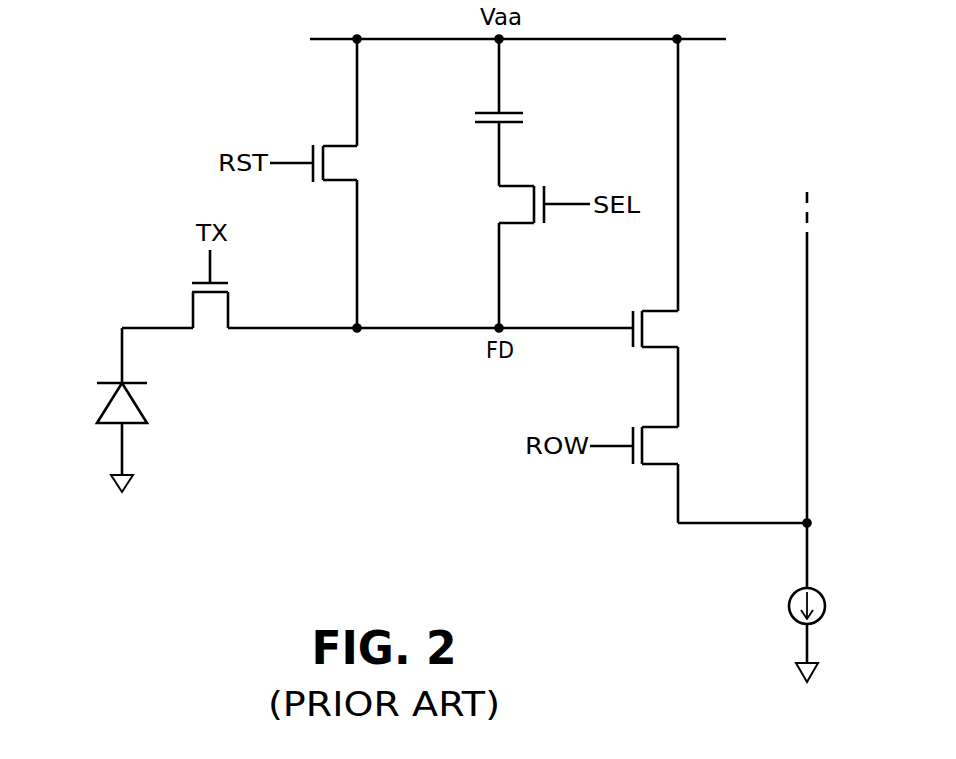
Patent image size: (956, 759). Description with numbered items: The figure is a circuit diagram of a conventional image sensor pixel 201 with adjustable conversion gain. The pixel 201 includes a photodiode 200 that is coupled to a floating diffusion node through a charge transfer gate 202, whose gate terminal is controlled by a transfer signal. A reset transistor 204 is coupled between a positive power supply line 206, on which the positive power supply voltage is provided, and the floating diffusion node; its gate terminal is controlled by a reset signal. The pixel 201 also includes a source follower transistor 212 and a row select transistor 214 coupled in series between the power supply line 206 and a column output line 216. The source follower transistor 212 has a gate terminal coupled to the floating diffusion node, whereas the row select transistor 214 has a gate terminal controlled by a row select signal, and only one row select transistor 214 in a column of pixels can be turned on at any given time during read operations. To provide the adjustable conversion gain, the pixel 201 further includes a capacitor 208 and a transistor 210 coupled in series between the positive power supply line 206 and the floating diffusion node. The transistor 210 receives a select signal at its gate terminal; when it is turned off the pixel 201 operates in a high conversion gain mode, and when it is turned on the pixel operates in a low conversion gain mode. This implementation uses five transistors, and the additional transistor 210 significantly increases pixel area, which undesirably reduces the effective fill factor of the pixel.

The photodiode 200 is at (112, 406).
The image sensor pixel 201 is at (138, 76).
The charge transfer gate 202 is at (194, 311).
The reset transistor 204 is at (341, 151).
The positive power supply line 206 is at (413, 37).
The capacitor 208 is at (512, 110).
The transistor 210 is at (516, 217).
The source follower transistor 212 is at (660, 339).
The row select transistor 214 is at (660, 458).
The column output line 216 is at (809, 425).